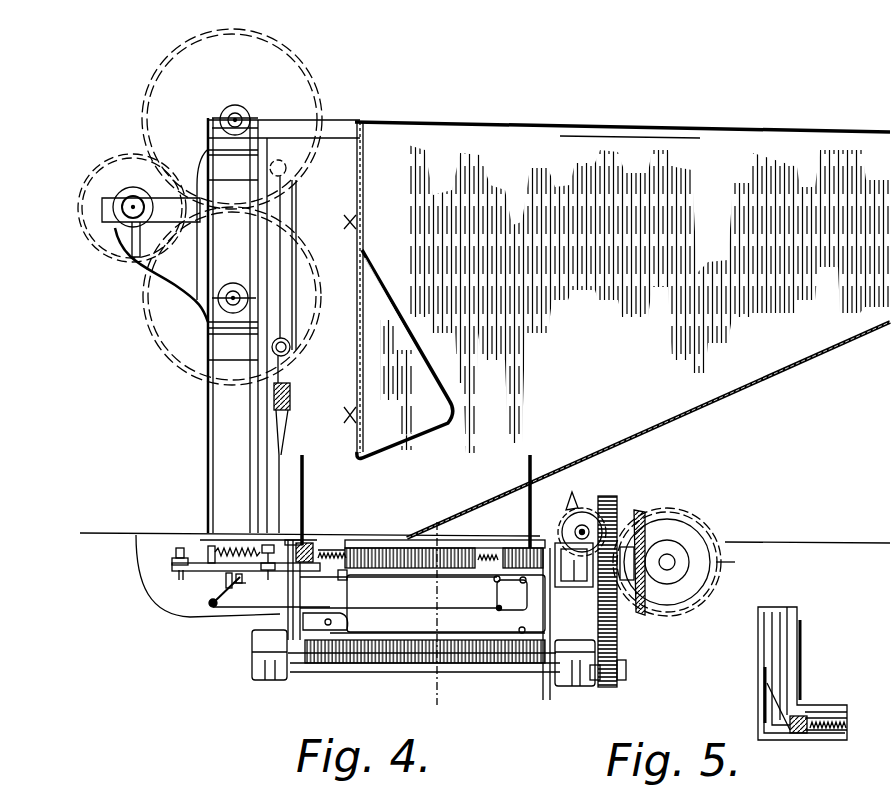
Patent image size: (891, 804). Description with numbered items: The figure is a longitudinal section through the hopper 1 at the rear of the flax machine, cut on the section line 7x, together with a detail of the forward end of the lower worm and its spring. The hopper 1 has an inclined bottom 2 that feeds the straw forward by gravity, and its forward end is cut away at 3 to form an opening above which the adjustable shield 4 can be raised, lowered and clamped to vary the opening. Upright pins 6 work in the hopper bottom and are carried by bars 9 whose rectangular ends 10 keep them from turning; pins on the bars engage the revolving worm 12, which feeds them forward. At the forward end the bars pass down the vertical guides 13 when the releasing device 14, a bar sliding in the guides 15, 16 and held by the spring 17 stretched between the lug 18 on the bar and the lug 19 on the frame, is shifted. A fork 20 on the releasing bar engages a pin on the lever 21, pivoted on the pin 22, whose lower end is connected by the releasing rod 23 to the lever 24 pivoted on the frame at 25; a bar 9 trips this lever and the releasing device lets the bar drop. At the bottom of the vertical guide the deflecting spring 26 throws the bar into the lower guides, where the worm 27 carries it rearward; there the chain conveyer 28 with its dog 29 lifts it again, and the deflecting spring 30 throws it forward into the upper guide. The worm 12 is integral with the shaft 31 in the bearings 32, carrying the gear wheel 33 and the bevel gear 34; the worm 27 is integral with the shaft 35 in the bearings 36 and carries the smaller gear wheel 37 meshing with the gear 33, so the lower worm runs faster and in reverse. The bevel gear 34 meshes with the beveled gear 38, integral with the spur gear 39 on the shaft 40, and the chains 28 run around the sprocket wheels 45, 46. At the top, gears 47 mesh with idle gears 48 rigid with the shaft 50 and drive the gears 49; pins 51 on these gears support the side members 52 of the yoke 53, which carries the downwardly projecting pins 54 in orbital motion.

In FIG. 4, the hopper 1 is at (720, 143).
In FIG. 4, the inclined bottom 2 is at (708, 393).
In FIG. 4, the cut-away opening 3 is at (357, 477).
In FIG. 4, the adjustable shield 4 is at (408, 440).
In FIG. 4, the upright pins 6 is at (306, 510).
In FIG. 5, the upright pins 6 is at (805, 662).
In FIG. 4, the section line 7x is at (440, 608).
In FIG. 4, the bars 9 is at (300, 543).
In FIG. 5, the bars 9 is at (798, 735).
In FIG. 4, the rectangular ends 10 is at (313, 547).
In FIG. 4, the revolving worm 12 is at (385, 540).
In FIG. 4, the vertical guides 13 is at (292, 600).
In FIG. 5, the vertical guides 13 is at (775, 637).
In FIG. 4, the releasing device 14 is at (342, 576).
In FIG. 4, the guide 15 is at (175, 575).
In FIG. 4, the guide 16 is at (255, 548).
In FIG. 4, the spring 17 is at (205, 540).
In FIG. 4, the lug 18 is at (212, 551).
In FIG. 4, the lug 19 is at (269, 545).
In FIG. 4, the fork 20 is at (235, 578).
In FIG. 4, the lever 21 is at (209, 603).
In FIG. 4, the pin 22 is at (230, 583).
In FIG. 4, the releasing rod 23 is at (235, 608).
In FIG. 4, the lever 24 is at (497, 598).
In FIG. 4, the pivot 25 is at (495, 579).
In FIG. 4, the deflecting spring 26 is at (333, 619).
In FIG. 5, the deflecting spring 26 is at (762, 690).
In FIG. 4, the lower worm 27 is at (380, 665).
In FIG. 4, the chain conveyer 28 is at (566, 518).
In FIG. 4, the dog 29 is at (581, 488).
In FIG. 4, the deflecting spring 30 is at (574, 561).
In FIG. 4, the shaft 31 is at (562, 541).
In FIG. 4, the bearings 32 is at (618, 607).
In FIG. 4, the gear wheel 33 is at (612, 500).
In FIG. 4, the bevel gear 34 is at (643, 512).
In FIG. 4, the shaft 35 is at (550, 678).
In FIG. 4, the bearings 36 is at (252, 668).
In FIG. 4, the gear wheel 37 is at (620, 677).
In FIG. 4, the beveled gear 38 is at (680, 540).
In FIG. 4, the spur gear 39 is at (735, 563).
In FIG. 4, the shaft 40 is at (670, 562).
In FIG. 4, the sprocket wheel 45 is at (585, 522).
In FIG. 4, the sprocket wheel 46 is at (596, 680).
In FIG. 4, the gear 47 is at (300, 83).
In FIG. 4, the idle gear 48 is at (92, 212).
In FIG. 4, the gear 49 is at (162, 315).
In FIG. 4, the shaft 50 is at (130, 205).
In FIG. 4, the pins 51 is at (290, 168).
In FIG. 4, the side members 52 is at (298, 226).
In FIG. 4, the yoke 53 is at (291, 396).
In FIG. 4, the downwardly projecting pins 54 is at (284, 430).